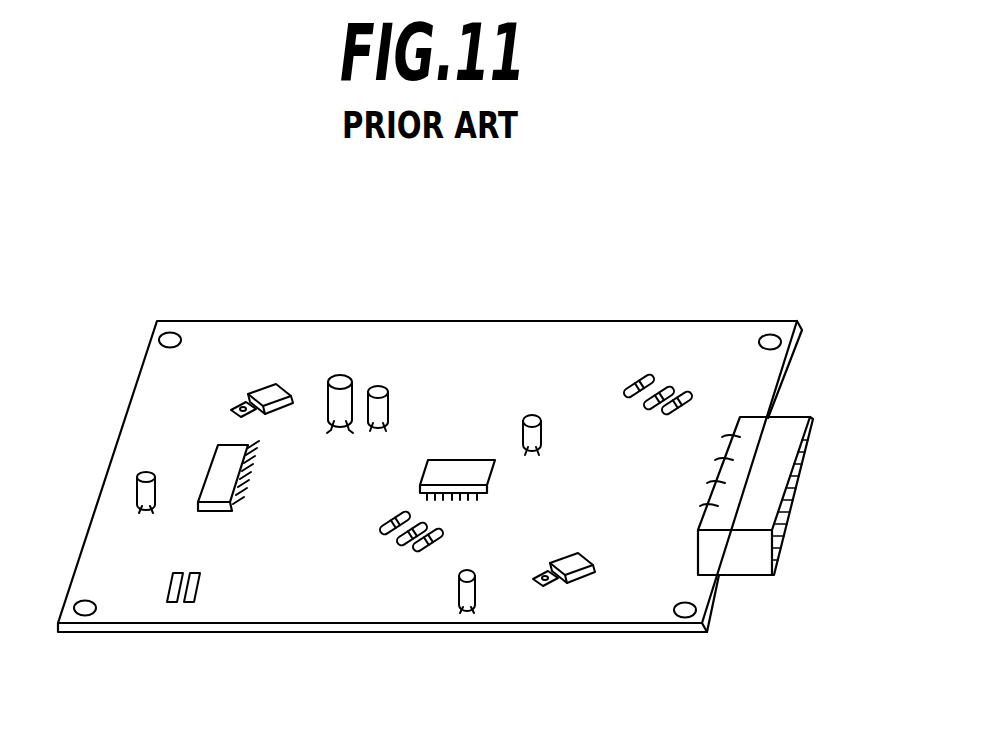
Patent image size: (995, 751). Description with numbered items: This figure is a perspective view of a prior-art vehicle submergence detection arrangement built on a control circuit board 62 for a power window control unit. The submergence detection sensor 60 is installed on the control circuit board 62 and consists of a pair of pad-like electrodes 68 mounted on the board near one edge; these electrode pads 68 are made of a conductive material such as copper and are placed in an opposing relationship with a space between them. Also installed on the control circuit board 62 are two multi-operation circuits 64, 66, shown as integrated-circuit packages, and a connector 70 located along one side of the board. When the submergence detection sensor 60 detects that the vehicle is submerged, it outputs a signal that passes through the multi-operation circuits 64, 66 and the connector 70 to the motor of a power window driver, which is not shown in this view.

The submergence detection sensor 60 is at (203, 590).
The control circuit board 62 is at (567, 343).
The multi-operation circuit 64 is at (223, 458).
The multi-operation circuit 66 is at (467, 470).
The pad-like electrodes 68 is at (188, 603).
The connector 70 is at (812, 433).